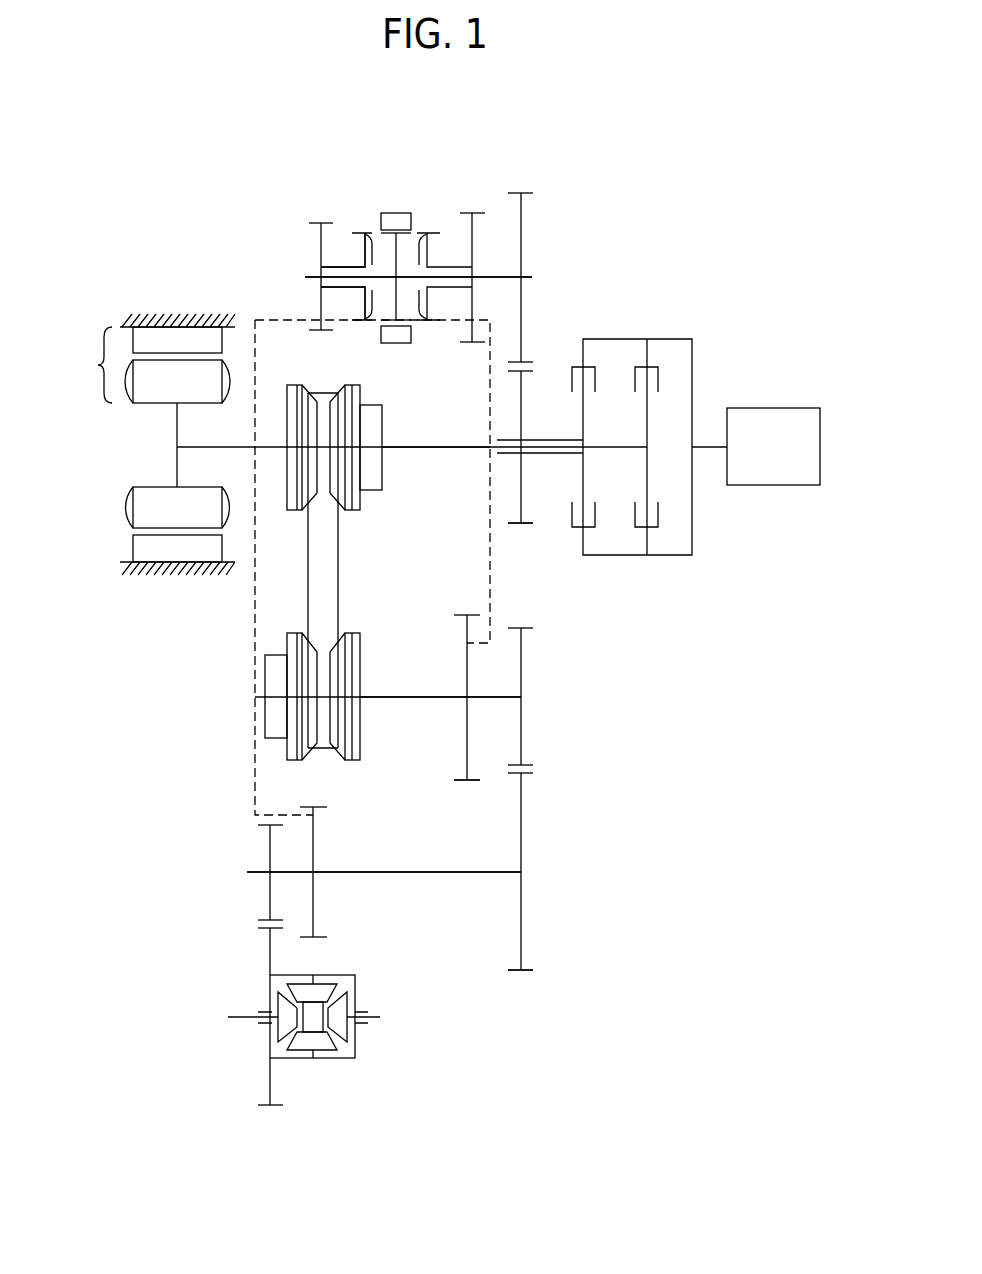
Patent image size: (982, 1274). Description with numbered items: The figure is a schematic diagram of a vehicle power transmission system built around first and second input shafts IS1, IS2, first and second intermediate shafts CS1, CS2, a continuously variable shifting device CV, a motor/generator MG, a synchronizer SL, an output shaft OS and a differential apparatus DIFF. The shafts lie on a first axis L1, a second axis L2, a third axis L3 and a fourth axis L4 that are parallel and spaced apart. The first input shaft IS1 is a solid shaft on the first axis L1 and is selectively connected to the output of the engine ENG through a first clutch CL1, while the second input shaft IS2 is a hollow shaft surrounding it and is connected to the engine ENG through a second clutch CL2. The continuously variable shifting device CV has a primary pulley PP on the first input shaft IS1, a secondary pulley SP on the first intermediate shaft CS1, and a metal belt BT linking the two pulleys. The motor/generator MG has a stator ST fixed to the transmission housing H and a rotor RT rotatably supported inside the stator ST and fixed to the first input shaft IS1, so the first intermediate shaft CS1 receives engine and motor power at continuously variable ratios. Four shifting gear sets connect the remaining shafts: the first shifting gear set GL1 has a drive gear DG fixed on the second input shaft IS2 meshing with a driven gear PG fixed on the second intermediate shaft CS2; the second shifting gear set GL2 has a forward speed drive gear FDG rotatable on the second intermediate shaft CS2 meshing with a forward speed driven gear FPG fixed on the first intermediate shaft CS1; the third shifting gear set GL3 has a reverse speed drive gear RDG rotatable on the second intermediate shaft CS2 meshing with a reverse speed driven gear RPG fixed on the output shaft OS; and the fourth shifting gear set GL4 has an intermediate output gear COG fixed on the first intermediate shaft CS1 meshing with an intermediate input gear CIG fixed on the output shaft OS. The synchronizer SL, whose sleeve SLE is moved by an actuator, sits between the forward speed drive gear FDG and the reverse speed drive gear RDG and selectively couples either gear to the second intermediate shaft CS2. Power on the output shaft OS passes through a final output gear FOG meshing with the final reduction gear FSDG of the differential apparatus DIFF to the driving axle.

The synchronizer SL is at (396, 218).
The sleeve SLE is at (398, 212).
The third shifting gear set GL3 is at (317, 210).
The forward speed drive gear FDG is at (470, 213).
The reverse speed drive gear RDG is at (320, 243).
The driven gear PG is at (522, 218).
The second intermediate shaft CS2 is at (493, 277).
The second clutch CL2 is at (593, 356).
The first clutch CL1 is at (659, 356).
The drive gear DG is at (522, 398).
The transmission housing H is at (129, 318).
The motor/generator MG is at (149, 444).
The stator ST is at (177, 444).
The rotor RT is at (177, 444).
The first axis L1 is at (177, 447).
The second axis L2 is at (255, 697).
The third axis L3 is at (297, 277).
The fourth axis L4 is at (240, 872).
The primary pulley PP is at (382, 415).
The first input shaft IS1 is at (432, 449).
The second input shaft IS2 is at (547, 455).
The first shifting gear set GL1 is at (528, 538).
The metal belt BT is at (340, 540).
The continuously variable shifting device CV is at (290, 546).
The engine ENG is at (756, 446).
The secondary pulley SP is at (362, 655).
The intermediate output gear COG is at (522, 672).
The first intermediate shaft CS1 is at (410, 699).
The forward speed driven gear FPG is at (466, 765).
The second shifting gear set GL2 is at (463, 796).
The reverse speed driven gear RPG is at (314, 835).
The intermediate input gear CIG is at (522, 822).
The final output gear FOG is at (269, 898).
The output shaft OS is at (410, 874).
The final reduction gear FSDG is at (269, 948).
The fourth shifting gear set GL4 is at (523, 986).
The differential apparatus DIFF is at (338, 1060).